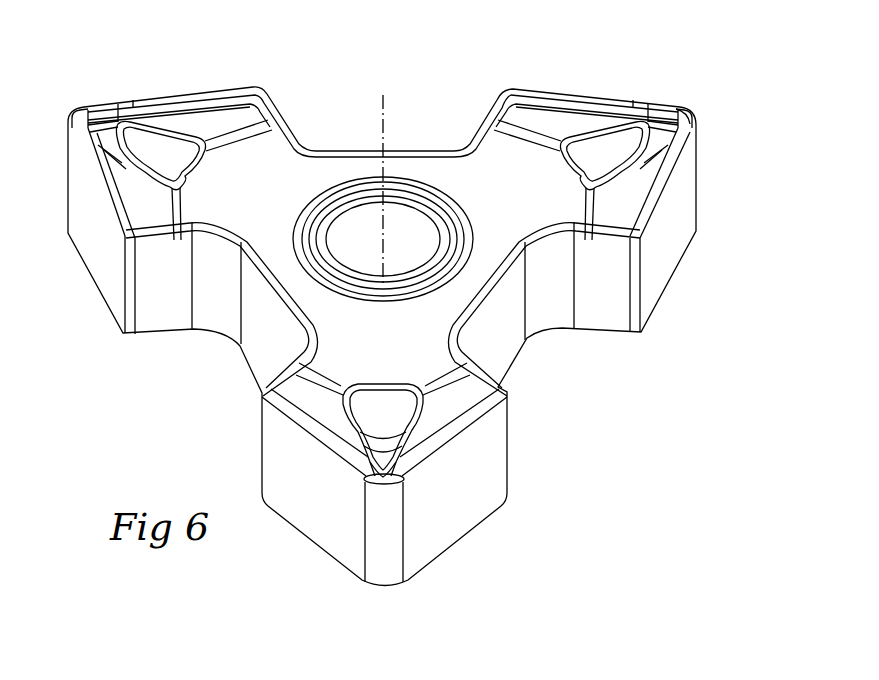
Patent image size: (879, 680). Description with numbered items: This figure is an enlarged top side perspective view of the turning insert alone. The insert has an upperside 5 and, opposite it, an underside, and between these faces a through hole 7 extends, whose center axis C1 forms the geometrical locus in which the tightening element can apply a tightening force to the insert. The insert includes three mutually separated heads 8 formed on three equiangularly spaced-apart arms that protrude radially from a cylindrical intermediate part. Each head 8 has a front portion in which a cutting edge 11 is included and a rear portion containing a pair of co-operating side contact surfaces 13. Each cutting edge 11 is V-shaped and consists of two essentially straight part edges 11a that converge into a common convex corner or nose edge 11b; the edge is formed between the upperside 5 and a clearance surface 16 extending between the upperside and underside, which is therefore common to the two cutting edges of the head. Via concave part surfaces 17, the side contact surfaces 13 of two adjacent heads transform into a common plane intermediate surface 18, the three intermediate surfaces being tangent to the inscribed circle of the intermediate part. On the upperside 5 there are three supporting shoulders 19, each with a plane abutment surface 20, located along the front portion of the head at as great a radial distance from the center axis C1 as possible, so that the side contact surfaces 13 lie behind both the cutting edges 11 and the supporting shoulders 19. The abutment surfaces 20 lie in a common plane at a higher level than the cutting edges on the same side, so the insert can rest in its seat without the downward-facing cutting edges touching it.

The upperside 5 is at (490, 195).
The through hole 7 is at (351, 232).
The head 8 is at (125, 341).
The cutting edge 11 is at (181, 93).
The part edge 11a is at (547, 89).
The nose edge 11b is at (690, 109).
The side contact surface 13 is at (175, 301).
The clearance surface 16 is at (106, 238).
The concave part surface 17 is at (229, 297).
The intermediate surface 18 is at (284, 346).
The supporting shoulder 19 is at (208, 156).
The abutment surface 20 is at (188, 167).
The center axis C1 is at (383, 105).